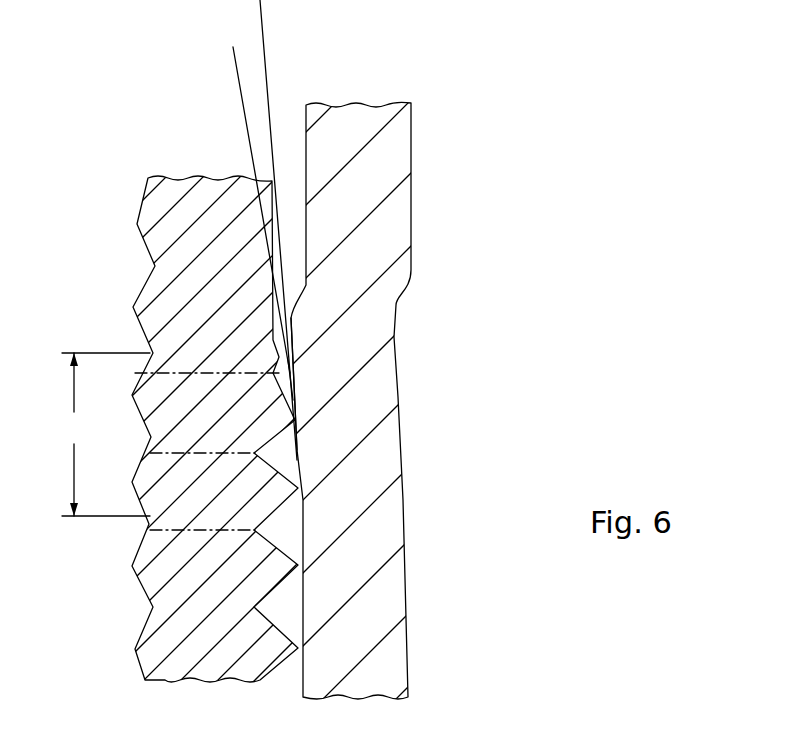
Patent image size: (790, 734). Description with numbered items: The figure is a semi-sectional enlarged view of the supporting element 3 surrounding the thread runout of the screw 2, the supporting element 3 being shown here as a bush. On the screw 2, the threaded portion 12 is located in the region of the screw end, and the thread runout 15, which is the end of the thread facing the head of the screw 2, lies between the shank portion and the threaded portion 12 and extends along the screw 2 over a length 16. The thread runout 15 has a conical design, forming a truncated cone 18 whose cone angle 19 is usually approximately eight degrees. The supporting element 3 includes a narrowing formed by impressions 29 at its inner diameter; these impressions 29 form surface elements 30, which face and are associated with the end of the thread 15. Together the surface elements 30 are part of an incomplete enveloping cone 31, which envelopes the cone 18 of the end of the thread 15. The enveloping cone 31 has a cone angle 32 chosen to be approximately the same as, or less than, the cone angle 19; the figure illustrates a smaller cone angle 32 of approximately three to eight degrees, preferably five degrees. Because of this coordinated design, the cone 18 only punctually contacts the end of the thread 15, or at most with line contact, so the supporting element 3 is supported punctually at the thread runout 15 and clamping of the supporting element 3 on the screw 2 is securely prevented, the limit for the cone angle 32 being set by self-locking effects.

The screw 2 is at (217, 258).
The supporting element 3 is at (377, 228).
The threaded portion 12 is at (200, 610).
The thread runout 15 is at (177, 485).
The length 16 is at (106, 434).
The cone 18 is at (238, 70).
The cone angle 19 is at (238, 88).
The impressions 29 is at (340, 351).
The surface elements 30 is at (296, 400).
The enveloping cone 31 is at (268, 100).
The cone angle 32 is at (258, 36).